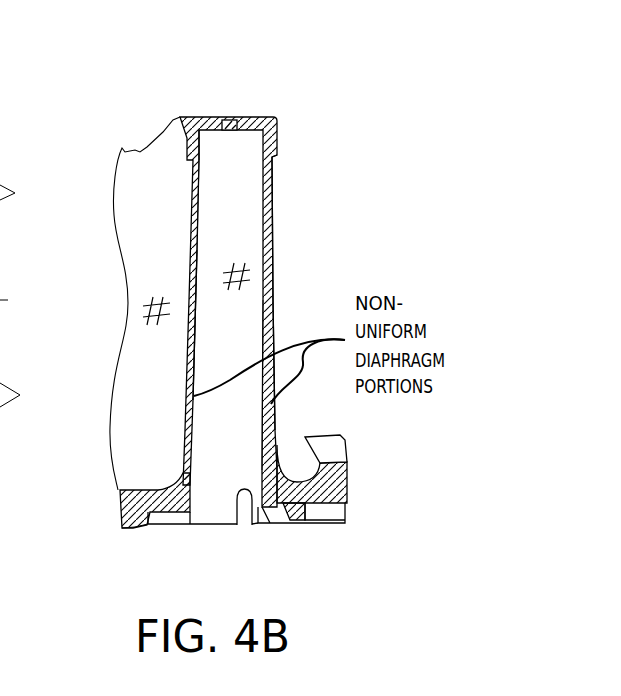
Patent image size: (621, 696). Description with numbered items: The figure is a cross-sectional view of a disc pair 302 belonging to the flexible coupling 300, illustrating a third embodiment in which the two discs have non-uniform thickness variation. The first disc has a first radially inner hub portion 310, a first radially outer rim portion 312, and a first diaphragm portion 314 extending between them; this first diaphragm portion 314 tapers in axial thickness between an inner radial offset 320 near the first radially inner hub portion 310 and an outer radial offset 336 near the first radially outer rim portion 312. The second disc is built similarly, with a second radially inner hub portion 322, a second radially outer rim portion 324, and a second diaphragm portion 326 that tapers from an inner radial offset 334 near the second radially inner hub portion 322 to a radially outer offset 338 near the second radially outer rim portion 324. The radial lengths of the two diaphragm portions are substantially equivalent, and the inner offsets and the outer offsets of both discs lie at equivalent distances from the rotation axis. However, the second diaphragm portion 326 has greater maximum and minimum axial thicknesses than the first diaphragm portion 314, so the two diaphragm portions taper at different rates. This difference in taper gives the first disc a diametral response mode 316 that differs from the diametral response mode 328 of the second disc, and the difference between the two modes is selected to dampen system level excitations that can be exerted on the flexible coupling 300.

The flexible coupling 300 is at (105, 498).
The disc pair 302 is at (107, 347).
The first radially inner hub portion 310 is at (172, 500).
The first radially outer rim portion 312 is at (208, 118).
The first diaphragm portion 314 is at (196, 308).
The diametral response mode 316 is at (159, 304).
The inner radial offset 320 is at (196, 498).
The second radially inner hub portion 322 is at (275, 483).
The second radially outer rim portion 324 is at (276, 138).
The second diaphragm portion 326 is at (272, 312).
The diametral response mode 328 is at (243, 283).
The inner radial offset 334 is at (288, 442).
The outer radial offset 336 is at (205, 167).
The radially outer offset 338 is at (283, 158).